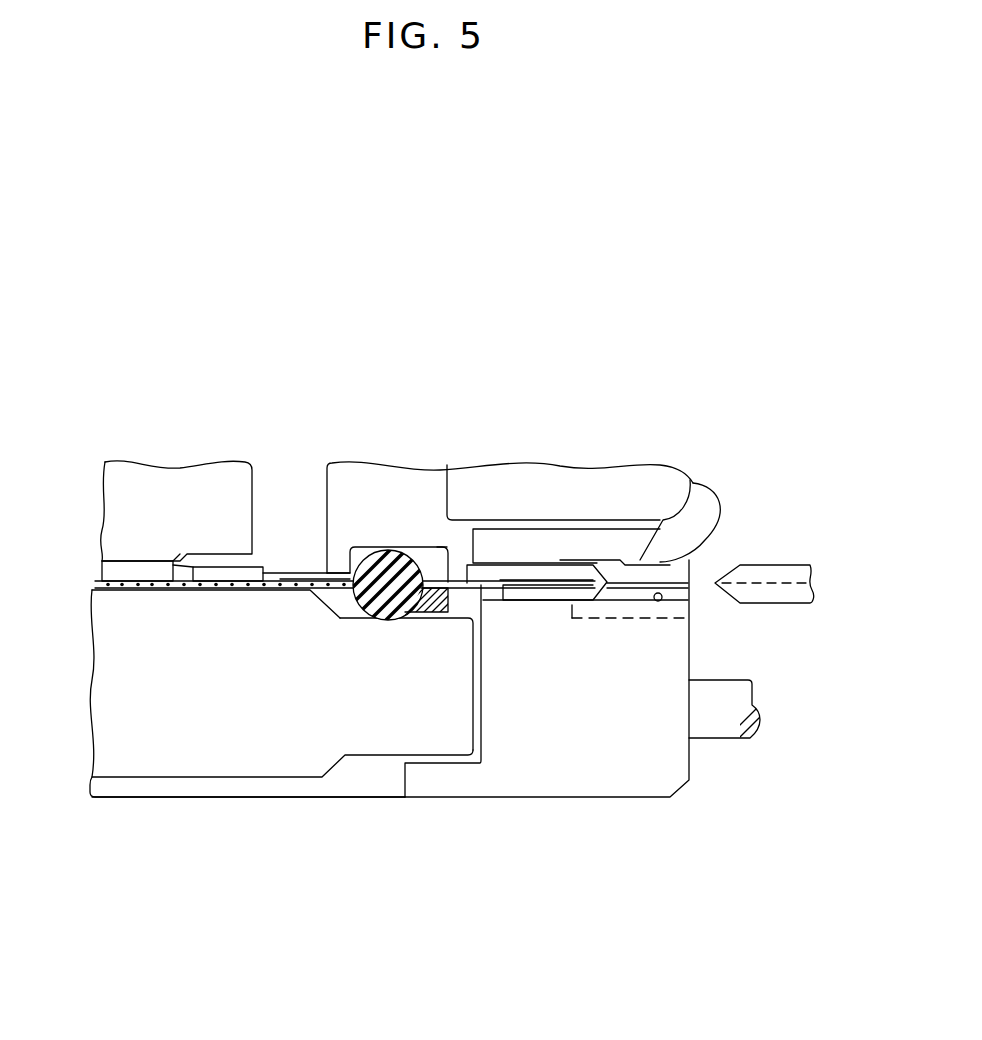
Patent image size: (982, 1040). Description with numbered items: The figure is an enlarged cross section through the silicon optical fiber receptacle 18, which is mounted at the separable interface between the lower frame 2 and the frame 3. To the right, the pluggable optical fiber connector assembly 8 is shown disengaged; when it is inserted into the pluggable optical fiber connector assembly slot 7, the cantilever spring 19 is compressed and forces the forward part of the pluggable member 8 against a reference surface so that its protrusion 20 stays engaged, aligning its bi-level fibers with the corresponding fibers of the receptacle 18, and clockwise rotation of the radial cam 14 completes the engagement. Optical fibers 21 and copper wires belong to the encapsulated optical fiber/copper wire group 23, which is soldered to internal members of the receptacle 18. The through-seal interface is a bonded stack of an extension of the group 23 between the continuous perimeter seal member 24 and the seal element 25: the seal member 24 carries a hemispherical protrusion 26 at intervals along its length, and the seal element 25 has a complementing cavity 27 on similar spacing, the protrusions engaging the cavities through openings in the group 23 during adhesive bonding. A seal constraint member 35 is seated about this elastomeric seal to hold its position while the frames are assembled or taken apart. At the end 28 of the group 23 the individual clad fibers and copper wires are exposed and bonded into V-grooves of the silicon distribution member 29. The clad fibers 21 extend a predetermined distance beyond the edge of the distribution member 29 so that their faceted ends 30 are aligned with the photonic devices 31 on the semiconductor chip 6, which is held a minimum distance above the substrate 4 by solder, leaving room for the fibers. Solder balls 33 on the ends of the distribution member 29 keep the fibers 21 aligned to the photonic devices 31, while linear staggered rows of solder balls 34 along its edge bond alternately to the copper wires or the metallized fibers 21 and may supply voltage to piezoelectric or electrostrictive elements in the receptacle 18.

The lower frame 2 is at (612, 798).
The frame 3 is at (125, 462).
The substrate 4 is at (132, 779).
The semiconductor chip 6 is at (104, 525).
The pluggable optical fiber connector assembly slot 7 is at (652, 595).
The pluggable optical fiber connector assembly 8 is at (772, 565).
The radial cam 14 is at (735, 740).
The silicon optical fiber receptacle 18 is at (570, 580).
The cantilever spring 19 is at (647, 602).
The protrusion 20 is at (632, 562).
The optical fibers 21 is at (176, 590).
The encapsulated optical fiber/copper wire group 23 is at (458, 565).
The continuous perimeter seal member 24 is at (390, 553).
The seal element 25 is at (408, 592).
The hemispherical protrusion 26 is at (372, 605).
The complementing cavity 27 is at (383, 602).
The end 28 is at (307, 576).
The silicon distribution member 29 is at (240, 567).
The faceted ends 30 is at (146, 590).
The photonic devices 31 is at (149, 563).
The solder balls 33 is at (232, 590).
The solder balls 34 is at (291, 575).
The seal constraint member 35 is at (432, 546).